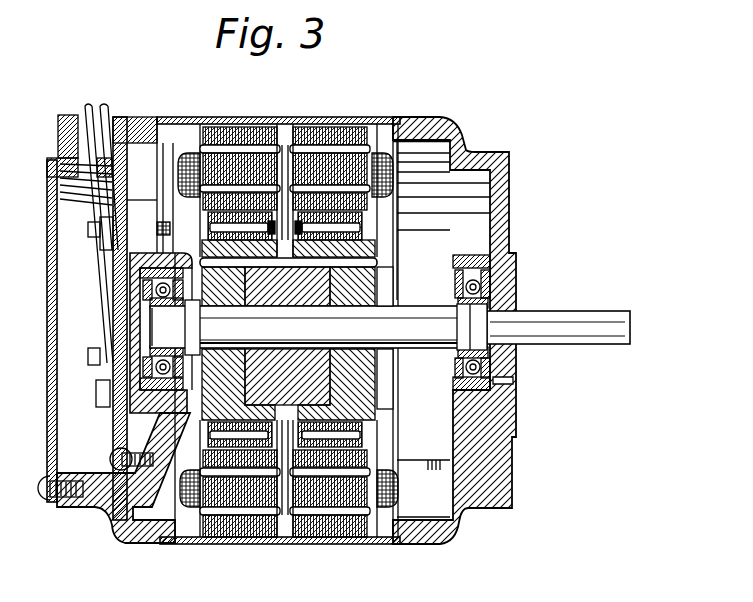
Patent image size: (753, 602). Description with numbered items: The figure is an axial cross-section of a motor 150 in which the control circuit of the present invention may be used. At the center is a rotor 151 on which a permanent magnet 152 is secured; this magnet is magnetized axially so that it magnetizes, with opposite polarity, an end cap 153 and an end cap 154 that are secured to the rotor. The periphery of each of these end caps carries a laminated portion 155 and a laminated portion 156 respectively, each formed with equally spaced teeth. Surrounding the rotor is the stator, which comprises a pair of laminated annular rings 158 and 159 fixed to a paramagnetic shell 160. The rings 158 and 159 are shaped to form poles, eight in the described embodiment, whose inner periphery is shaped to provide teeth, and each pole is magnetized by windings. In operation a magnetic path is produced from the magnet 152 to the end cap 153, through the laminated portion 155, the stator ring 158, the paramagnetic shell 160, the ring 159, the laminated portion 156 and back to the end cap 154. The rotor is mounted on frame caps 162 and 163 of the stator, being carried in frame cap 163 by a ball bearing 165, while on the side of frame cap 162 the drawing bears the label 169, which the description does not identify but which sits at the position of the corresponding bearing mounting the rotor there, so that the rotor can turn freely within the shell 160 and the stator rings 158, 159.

The motor 150 is at (562, 158).
The rotor 151 is at (360, 287).
The permanent magnet 152 is at (317, 370).
The end cap 153 is at (384, 407).
The end cap 154 is at (186, 520).
The laminated portion 155 is at (345, 233).
The laminated portion 156 is at (216, 216).
The laminated annular ring 158 is at (240, 118).
The laminated annular ring 159 is at (360, 117).
The paramagnetic shell 160 is at (322, 118).
The frame cap 162 is at (503, 424).
The frame cap 163 is at (115, 537).
The ball bearing 165 is at (113, 426).
The bearing 169 is at (515, 361).